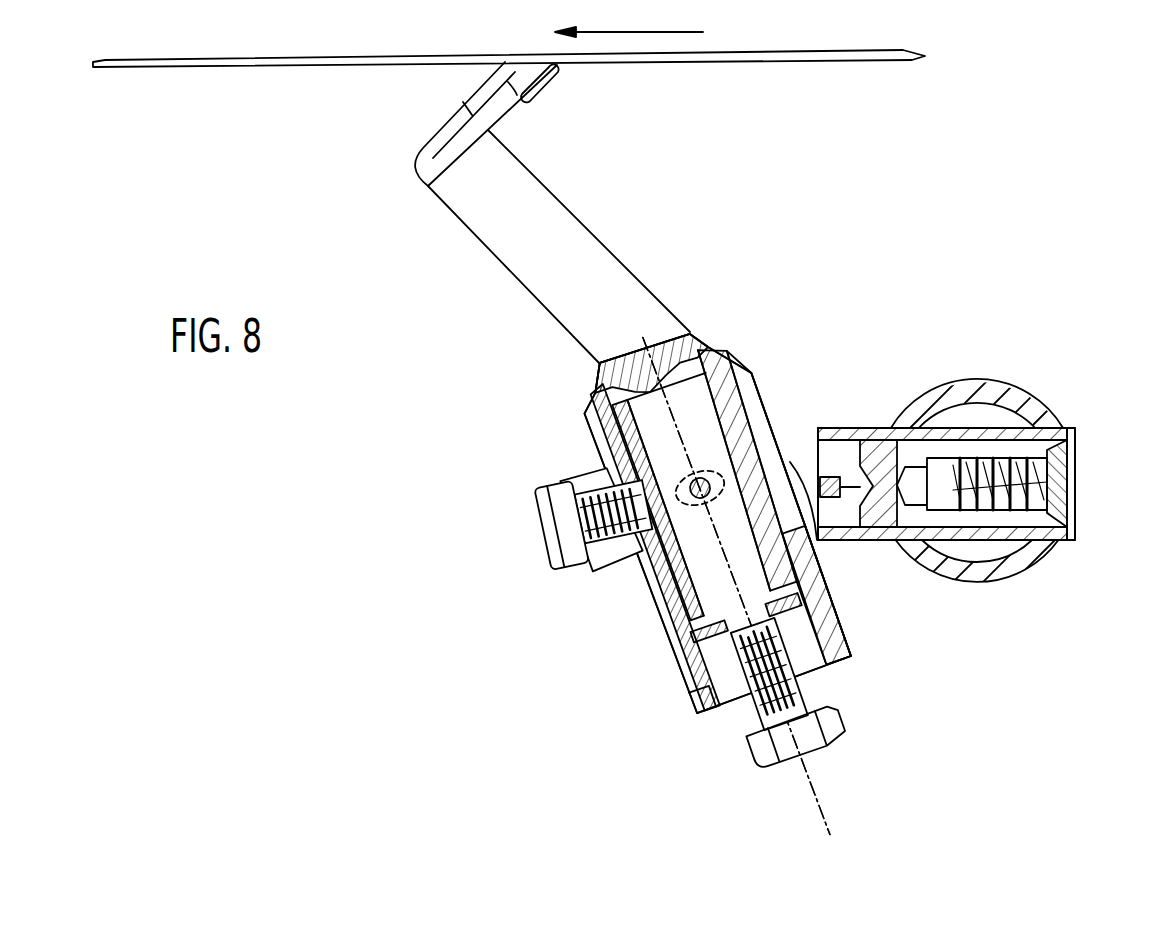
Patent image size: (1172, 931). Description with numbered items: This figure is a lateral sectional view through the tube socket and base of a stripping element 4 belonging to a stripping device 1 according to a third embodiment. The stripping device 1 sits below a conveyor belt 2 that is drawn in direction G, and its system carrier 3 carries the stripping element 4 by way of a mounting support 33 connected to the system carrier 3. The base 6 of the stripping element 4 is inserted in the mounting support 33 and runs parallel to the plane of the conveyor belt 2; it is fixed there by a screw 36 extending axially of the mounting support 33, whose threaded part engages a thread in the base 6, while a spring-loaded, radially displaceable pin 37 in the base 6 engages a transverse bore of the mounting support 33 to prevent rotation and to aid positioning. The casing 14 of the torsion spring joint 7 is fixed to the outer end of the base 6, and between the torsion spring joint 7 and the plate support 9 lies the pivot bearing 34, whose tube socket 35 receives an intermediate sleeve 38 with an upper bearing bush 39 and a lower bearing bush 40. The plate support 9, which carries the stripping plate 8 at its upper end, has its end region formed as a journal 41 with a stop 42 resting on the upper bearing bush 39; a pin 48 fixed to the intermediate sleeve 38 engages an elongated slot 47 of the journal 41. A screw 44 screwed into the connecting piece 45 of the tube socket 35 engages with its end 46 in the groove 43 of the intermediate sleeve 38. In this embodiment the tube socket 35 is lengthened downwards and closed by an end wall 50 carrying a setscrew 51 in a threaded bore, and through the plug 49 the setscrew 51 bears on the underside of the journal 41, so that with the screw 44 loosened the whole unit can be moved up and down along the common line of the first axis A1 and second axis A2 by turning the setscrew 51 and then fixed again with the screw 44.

The stripping device 1 is at (885, 292).
The conveyor belt 2 is at (795, 56).
The system carrier 3 is at (1022, 400).
The stripping element 4 is at (460, 233).
The base 6 is at (850, 457).
The torsion spring joint 7 is at (790, 418).
The stripping plate 8 is at (540, 77).
The plate support 9 is at (455, 182).
The casing 14 is at (808, 545).
The mounting support 33 is at (1067, 538).
The pivot bearing 34 is at (595, 360).
The tube socket 35 is at (663, 588).
The screw 36 is at (1073, 473).
The pin 37 is at (833, 498).
The intermediate sleeve 38 is at (593, 400).
The upper bearing bush 39 is at (690, 355).
The lower bearing bush 40 is at (688, 628).
The journal 41 is at (688, 537).
The stop 42 is at (690, 334).
The groove 43 is at (560, 556).
The screw 44 is at (548, 512).
The connecting piece 45 is at (583, 480).
The end 46 is at (700, 477).
The elongated slot 47 is at (748, 392).
The pin 48 is at (693, 465).
The plug 49 is at (688, 692).
The end wall 50 is at (720, 702).
The setscrew 51 is at (755, 755).
The direction G is at (690, 28).
The first axis A1 is at (826, 822).
The second axis A2 is at (736, 586).